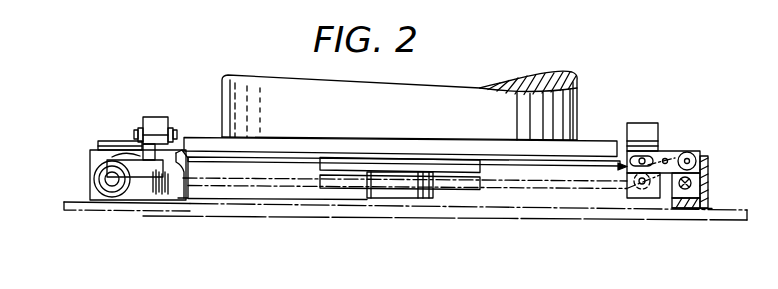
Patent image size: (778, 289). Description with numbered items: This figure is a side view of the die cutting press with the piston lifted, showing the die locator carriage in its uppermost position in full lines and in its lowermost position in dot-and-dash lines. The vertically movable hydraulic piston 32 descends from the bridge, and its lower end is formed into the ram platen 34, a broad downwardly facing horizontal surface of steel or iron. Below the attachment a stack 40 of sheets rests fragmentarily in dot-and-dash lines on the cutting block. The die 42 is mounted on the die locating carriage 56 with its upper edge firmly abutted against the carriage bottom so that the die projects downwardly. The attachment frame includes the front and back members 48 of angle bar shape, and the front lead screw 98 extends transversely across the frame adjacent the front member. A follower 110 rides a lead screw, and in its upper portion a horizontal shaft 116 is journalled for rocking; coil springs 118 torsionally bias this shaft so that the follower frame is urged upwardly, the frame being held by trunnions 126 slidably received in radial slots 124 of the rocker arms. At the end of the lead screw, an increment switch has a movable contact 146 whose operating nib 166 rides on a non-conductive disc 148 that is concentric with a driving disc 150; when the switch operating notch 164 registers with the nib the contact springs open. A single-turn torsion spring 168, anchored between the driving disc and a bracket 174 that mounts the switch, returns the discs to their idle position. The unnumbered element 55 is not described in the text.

The hydraulic piston 32 is at (473, 100).
The ram platen 34 is at (288, 146).
The stack of sheets 40 is at (562, 219).
The die 42 is at (367, 182).
The front and back members 48 is at (703, 209).
The clamp member 55 is at (151, 139).
The die locating carriage 56 is at (366, 158).
The front lead screw 98 is at (708, 187).
The follower 110 is at (693, 179).
The horizontal shaft 116 is at (698, 152).
The coil springs 118 is at (673, 210).
The radial slots 124 is at (619, 152).
The trunnions 126 is at (643, 160).
The movable contact 146 is at (128, 156).
The disc 148 is at (115, 190).
The driving disc 150 is at (95, 178).
The switch operating notch 164 is at (118, 188).
The operating nib 166 is at (117, 153).
The torsion spring 168 is at (100, 175).
The bracket 174 is at (157, 170).